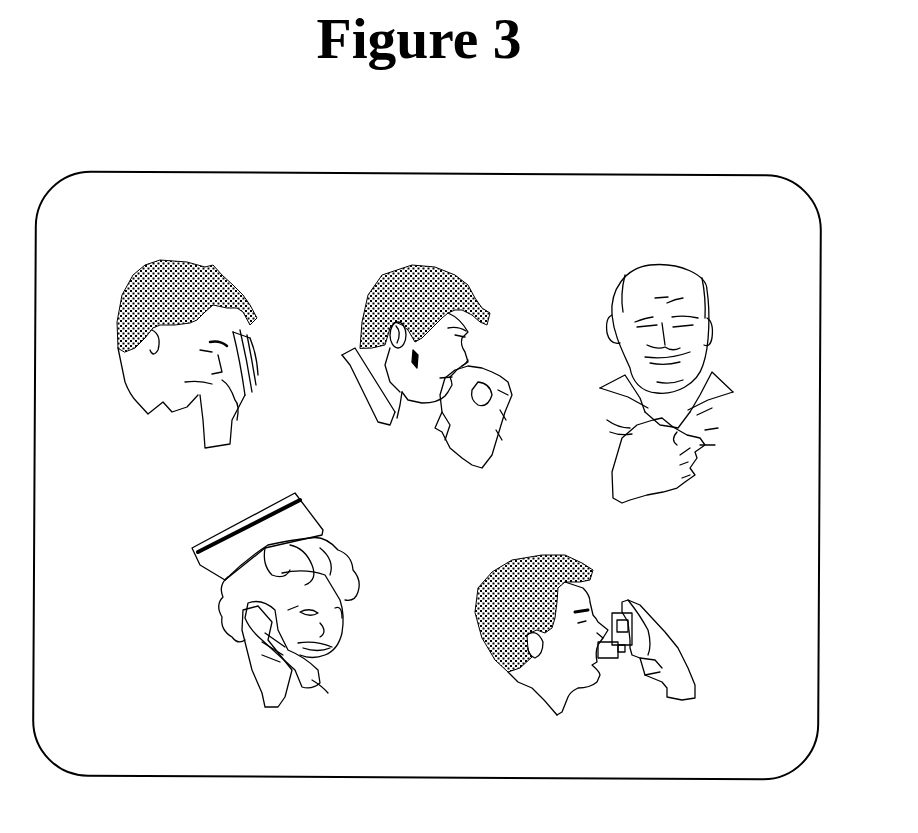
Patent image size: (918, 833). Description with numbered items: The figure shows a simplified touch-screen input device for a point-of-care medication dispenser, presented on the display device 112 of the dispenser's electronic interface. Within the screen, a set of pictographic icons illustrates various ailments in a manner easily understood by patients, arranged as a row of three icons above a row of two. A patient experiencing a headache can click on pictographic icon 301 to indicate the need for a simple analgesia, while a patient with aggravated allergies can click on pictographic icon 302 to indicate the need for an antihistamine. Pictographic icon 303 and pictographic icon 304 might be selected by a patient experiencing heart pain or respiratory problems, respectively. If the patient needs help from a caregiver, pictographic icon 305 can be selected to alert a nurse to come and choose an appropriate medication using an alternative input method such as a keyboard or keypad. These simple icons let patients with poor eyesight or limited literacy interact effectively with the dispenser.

The display device 112 is at (142, 174).
The pictographic icon 301 is at (162, 258).
The pictographic icon 302 is at (388, 262).
The pictographic icon 303 is at (637, 262).
The pictographic icon 304 is at (490, 567).
The pictographic icon 305 is at (227, 510).